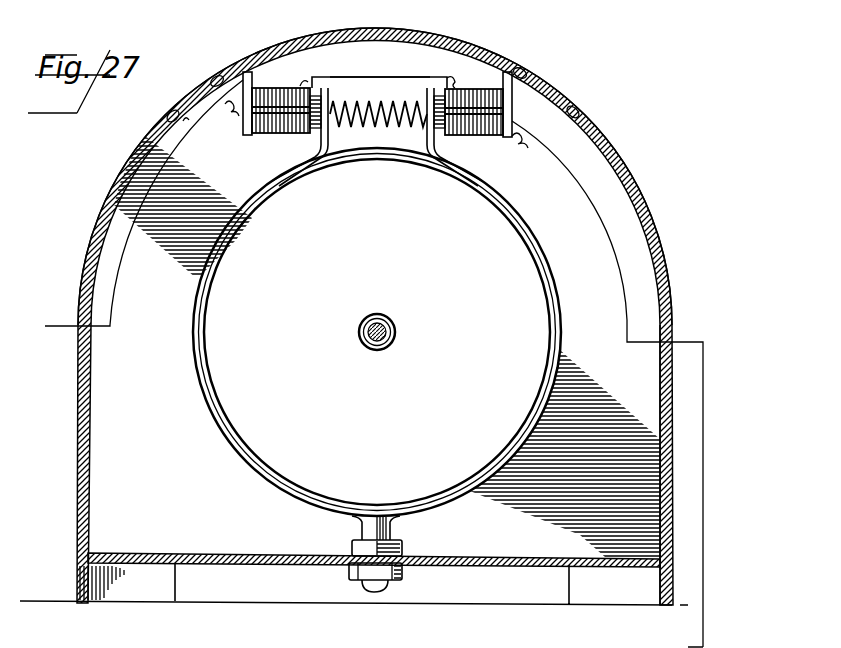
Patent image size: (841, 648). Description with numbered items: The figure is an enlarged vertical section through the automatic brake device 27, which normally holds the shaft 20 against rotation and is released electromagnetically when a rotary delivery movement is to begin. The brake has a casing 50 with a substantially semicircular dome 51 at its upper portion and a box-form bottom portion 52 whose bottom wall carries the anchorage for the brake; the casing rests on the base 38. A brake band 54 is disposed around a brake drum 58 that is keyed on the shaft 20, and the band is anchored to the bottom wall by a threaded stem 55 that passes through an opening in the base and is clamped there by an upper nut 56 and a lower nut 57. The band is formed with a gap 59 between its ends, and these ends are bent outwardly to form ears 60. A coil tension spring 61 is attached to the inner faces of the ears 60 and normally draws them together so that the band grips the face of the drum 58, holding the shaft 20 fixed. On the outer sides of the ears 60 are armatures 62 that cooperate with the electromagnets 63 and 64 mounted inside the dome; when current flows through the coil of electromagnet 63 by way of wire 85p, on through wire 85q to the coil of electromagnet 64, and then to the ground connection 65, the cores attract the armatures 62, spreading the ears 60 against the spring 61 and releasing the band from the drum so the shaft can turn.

The shaft 20 is at (395, 331).
The automatic brake device 27 is at (630, 144).
The base 38 is at (52, 600).
The casing 50 is at (672, 268).
The semicircular dome 51 is at (478, 53).
The box-form bottom portion 52 is at (666, 470).
The brake band 54 is at (382, 347).
The threaded stem 55 is at (422, 562).
The upper nut 56 is at (352, 545).
The lower nut 57 is at (401, 574).
The brake drum 58 is at (472, 216).
The gap 59 is at (393, 80).
The ears 60 is at (330, 87).
The coil tension spring 61 is at (374, 128).
The armatures 62 is at (314, 135).
The electromagnet 63 is at (280, 86).
The electromagnet 64 is at (481, 138).
The ground lead 65 is at (678, 484).
The wire 85p is at (58, 325).
The wire 85q is at (381, 77).